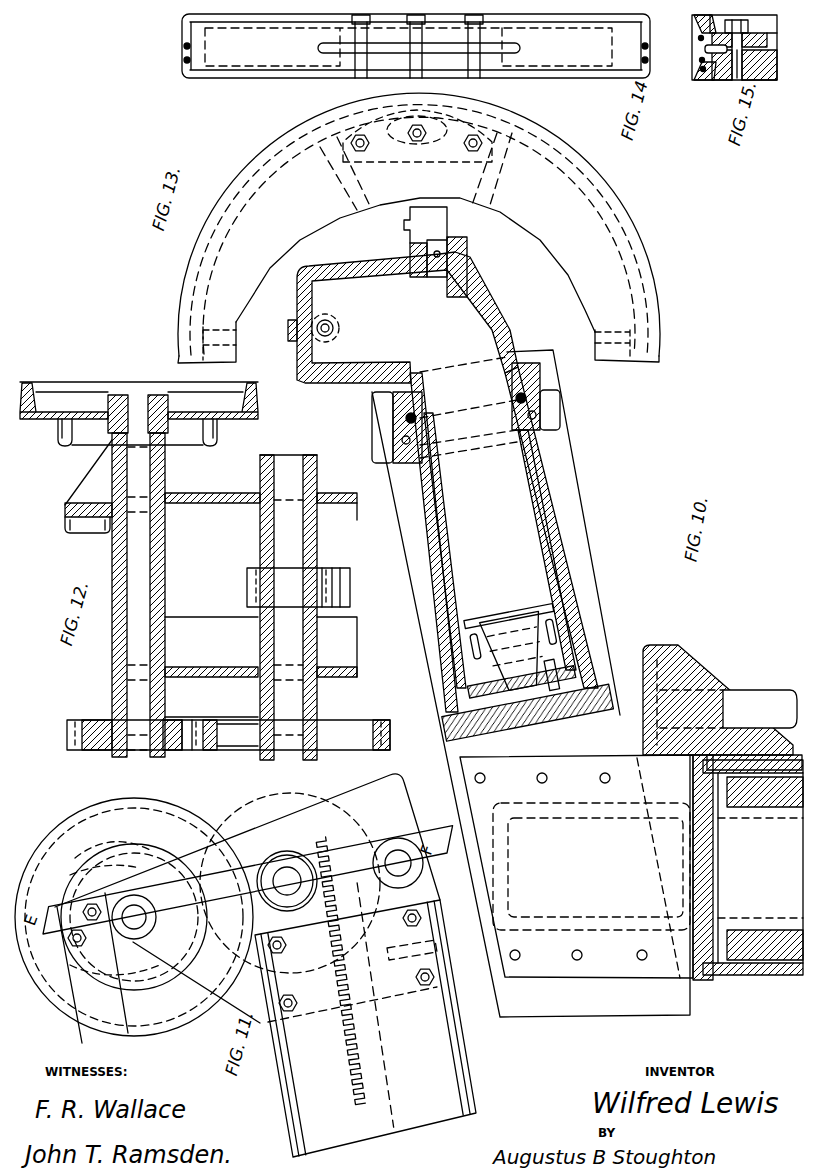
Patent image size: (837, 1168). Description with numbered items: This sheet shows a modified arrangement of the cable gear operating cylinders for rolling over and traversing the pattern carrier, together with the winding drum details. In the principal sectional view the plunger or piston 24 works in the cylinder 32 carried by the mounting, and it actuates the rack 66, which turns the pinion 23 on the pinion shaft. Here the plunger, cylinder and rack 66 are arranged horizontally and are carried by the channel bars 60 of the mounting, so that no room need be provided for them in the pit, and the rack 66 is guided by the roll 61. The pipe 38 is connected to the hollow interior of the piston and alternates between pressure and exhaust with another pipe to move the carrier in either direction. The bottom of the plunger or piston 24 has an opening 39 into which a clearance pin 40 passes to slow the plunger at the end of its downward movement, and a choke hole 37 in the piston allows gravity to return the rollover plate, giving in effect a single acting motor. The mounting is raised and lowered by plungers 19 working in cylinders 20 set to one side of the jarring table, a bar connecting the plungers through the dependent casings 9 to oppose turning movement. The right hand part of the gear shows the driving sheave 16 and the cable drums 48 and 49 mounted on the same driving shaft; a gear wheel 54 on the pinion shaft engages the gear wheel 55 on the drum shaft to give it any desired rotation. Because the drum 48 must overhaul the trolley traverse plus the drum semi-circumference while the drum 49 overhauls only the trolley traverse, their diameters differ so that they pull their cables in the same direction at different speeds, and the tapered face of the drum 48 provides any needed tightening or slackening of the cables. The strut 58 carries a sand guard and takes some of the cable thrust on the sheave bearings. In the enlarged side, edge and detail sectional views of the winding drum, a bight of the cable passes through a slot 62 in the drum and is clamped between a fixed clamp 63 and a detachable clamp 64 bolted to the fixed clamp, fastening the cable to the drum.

In FIG. 10, the dependent casing 9 is at (748, 975).
In FIG. 11, the driving sheave 16 is at (282, 868).
In FIG. 10, the plunger 19 is at (614, 930).
In FIG. 10, the cylinder 20 is at (781, 960).
In FIG. 12, the pinion 23 is at (247, 584).
In FIG. 10, the plunger 24 is at (548, 548).
In FIG. 10, the cylinder 32 is at (572, 575).
In FIG. 10, the choke hole 37 is at (586, 620).
In FIG. 10, the pipe 38 is at (316, 360).
In FIG. 10, the opening 39 is at (598, 635).
In FIG. 10, the clearance pin 40 is at (556, 722).
In FIG. 13, the drum 48 is at (266, 152).
In FIG. 12, the drum 48 is at (64, 383).
In FIG. 11, the drum 48 is at (58, 840).
In FIG. 12, the drum 49 is at (58, 440).
In FIG. 11, the drum 49 is at (88, 848).
In FIG. 12, the gear wheel 54 is at (238, 720).
In FIG. 12, the gear wheel 55 is at (193, 720).
In FIG. 12, the strut 58 is at (65, 528).
In FIG. 10, the channel bar 60 is at (425, 646).
In FIG. 11, the channel bar 60 is at (290, 1104).
In FIG. 11, the roll 61 is at (442, 902).
In FIG. 14, the slot 62 is at (319, 48).
In FIG. 15, the slot 62 is at (704, 48).
In FIG. 14, the fixed clamp 63 is at (358, 56).
In FIG. 15, the fixed clamp 63 is at (732, 80).
In FIG. 15, the detachable clamp 64 is at (778, 40).
In FIG. 10, the rack 66 is at (412, 246).
In FIG. 12, the rack 66 is at (351, 582).
In FIG. 11, the rack 66 is at (352, 1073).